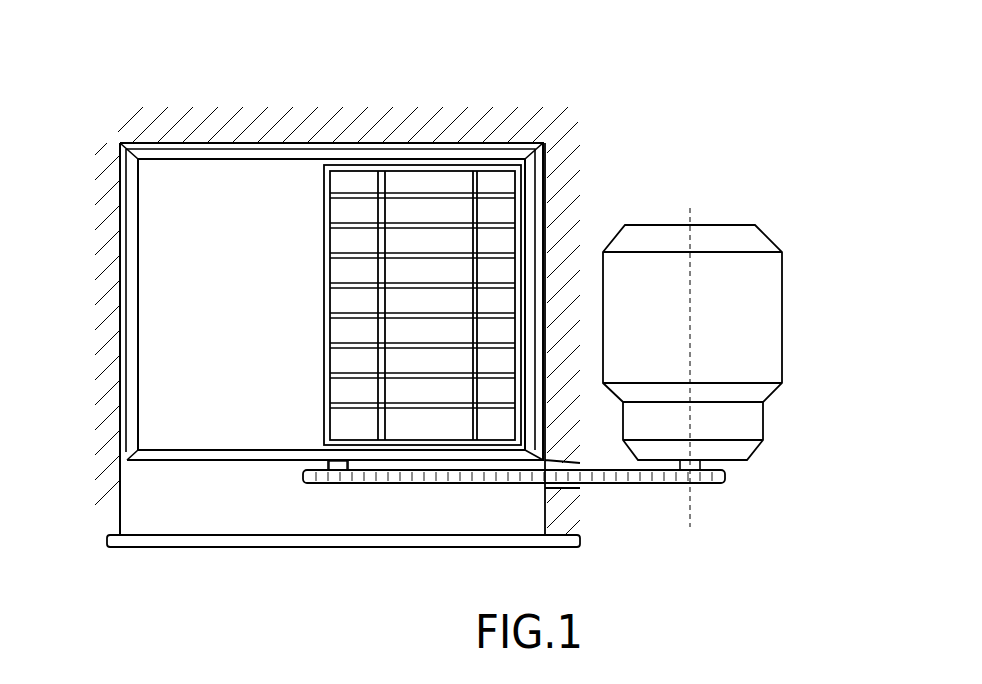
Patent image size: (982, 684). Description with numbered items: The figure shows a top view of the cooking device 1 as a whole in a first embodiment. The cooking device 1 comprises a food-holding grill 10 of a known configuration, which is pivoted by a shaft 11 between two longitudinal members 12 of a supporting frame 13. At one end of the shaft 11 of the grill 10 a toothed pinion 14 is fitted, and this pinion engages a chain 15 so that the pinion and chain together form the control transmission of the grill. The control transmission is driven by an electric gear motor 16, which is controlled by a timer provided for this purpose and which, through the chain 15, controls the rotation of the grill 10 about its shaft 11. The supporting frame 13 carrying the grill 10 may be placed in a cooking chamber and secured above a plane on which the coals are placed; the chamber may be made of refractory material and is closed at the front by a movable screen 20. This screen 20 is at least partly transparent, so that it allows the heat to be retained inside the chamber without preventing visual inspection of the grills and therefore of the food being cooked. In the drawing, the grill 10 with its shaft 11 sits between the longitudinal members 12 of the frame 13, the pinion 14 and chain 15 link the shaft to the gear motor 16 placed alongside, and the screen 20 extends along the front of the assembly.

The cooking device 1 is at (709, 95).
The food-holding grill 10 is at (420, 220).
The shaft 11 is at (328, 463).
The longitudinal members 12 is at (245, 162).
The supporting frame 13 is at (121, 311).
The toothed pinion 14 is at (333, 486).
The chain 15 is at (613, 487).
The electric gear motor 16 is at (758, 305).
The movable screen 20 is at (168, 549).